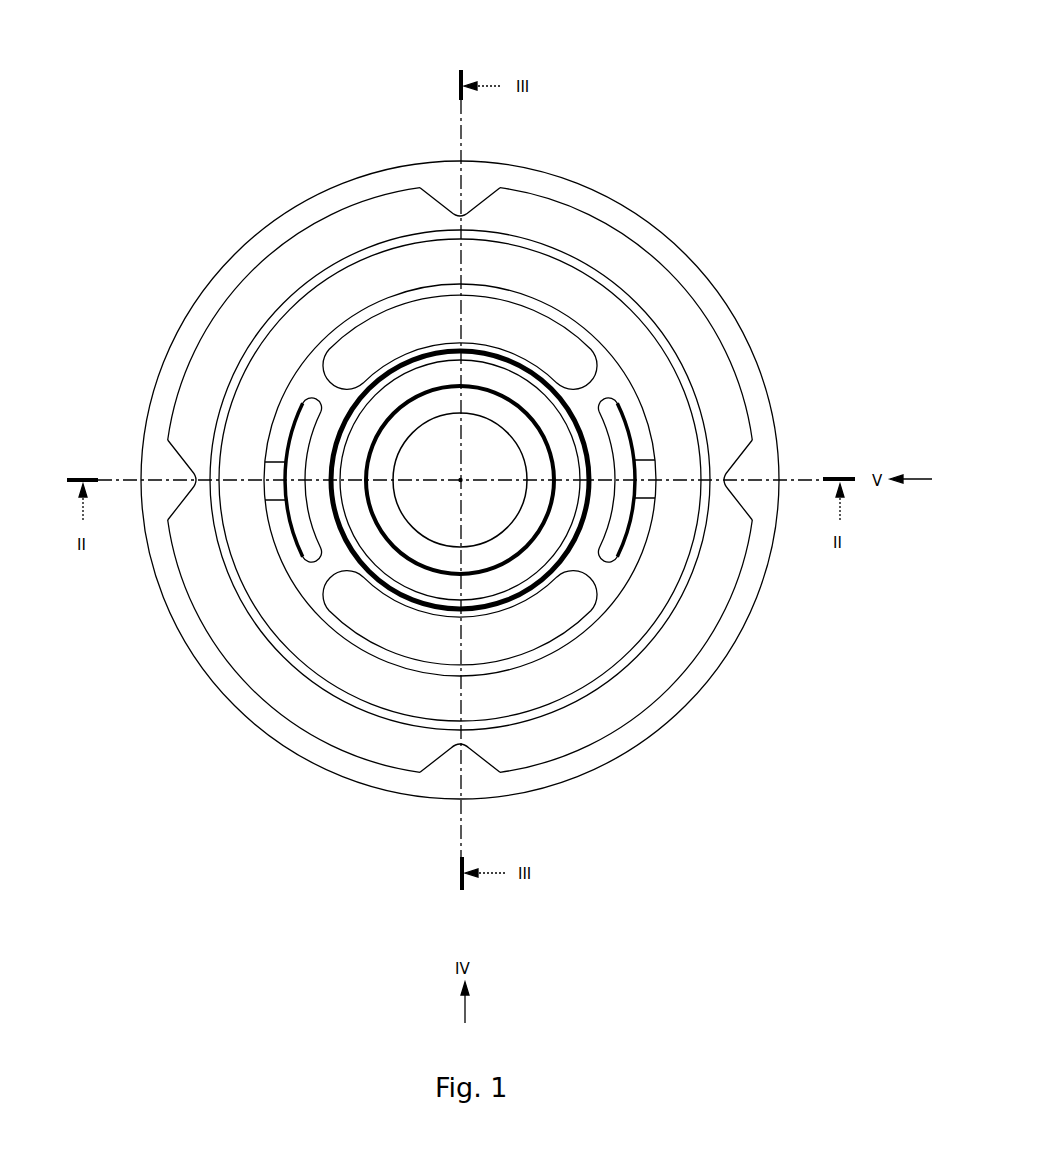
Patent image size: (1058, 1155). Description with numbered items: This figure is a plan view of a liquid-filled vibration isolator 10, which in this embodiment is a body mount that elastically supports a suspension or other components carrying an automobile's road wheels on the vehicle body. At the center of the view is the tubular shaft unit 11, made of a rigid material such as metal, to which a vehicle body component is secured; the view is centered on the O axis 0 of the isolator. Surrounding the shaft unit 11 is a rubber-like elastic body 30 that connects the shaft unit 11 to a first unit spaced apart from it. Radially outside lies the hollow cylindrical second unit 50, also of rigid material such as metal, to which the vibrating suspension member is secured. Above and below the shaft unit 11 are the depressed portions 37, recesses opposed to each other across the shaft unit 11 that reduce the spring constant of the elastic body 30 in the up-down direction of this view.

The liquid-filled vibration isolator 10 is at (773, 89).
The second unit 50 is at (670, 417).
The rubber-like elastic body 30 is at (620, 383).
The depressed portions 37 is at (407, 337).
The tubular shaft unit 11 is at (557, 423).
The O axis 0 is at (463, 483).